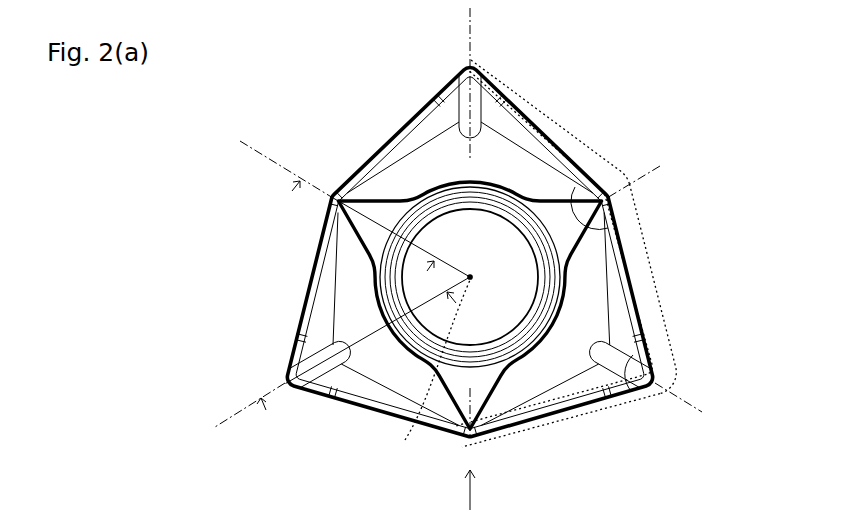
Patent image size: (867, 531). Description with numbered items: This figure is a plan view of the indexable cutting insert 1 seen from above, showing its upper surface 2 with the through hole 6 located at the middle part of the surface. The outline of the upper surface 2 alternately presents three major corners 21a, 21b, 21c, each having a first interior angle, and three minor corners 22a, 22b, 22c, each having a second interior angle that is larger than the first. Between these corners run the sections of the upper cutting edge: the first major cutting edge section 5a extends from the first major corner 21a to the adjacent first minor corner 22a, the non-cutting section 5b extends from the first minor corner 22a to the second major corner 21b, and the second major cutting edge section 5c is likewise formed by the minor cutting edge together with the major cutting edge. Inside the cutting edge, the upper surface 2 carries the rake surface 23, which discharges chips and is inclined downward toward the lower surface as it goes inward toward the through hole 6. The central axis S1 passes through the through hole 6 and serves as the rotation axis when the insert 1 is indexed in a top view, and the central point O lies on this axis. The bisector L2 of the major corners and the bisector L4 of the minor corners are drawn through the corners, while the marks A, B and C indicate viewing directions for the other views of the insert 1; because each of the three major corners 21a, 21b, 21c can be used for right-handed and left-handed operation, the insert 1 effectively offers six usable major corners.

The insert 1 is at (628, 147).
The upper surface 2 is at (447, 160).
The first major cutting edge section 5a is at (654, 252).
The non-cutting section 5b is at (560, 100).
The second major cutting edge section 5c is at (567, 422).
The through hole 6 is at (437, 228).
The first major corner 21a is at (651, 392).
The second major corner 21b is at (480, 62).
The third major corner 21c is at (288, 382).
The first minor corner 22a is at (612, 196).
The second minor corner 22b is at (467, 441).
The third minor corner 22c is at (334, 196).
The rake surface 23 is at (410, 122).
The bisector of the major corners L2 is at (456, 221).
The bisector of the minor corners L4 is at (446, 282).
The central point O is at (424, 366).
The central axis S1 is at (408, 448).
The direction A is at (478, 490).
The direction B is at (352, 360).
The direction C is at (351, 225).